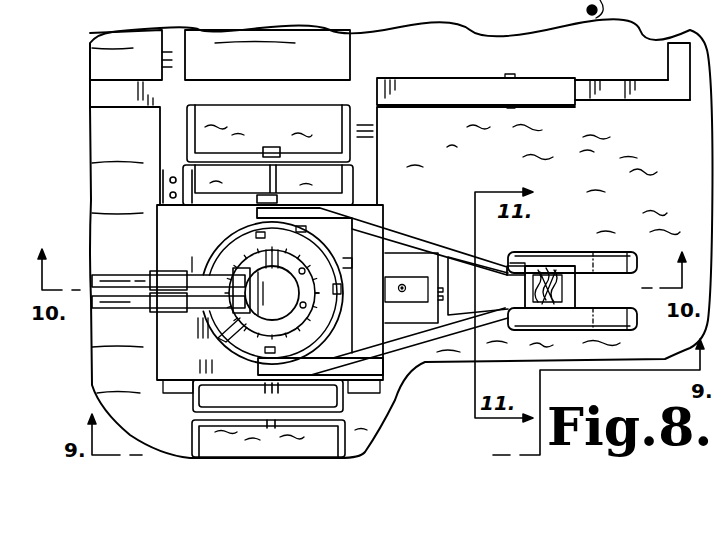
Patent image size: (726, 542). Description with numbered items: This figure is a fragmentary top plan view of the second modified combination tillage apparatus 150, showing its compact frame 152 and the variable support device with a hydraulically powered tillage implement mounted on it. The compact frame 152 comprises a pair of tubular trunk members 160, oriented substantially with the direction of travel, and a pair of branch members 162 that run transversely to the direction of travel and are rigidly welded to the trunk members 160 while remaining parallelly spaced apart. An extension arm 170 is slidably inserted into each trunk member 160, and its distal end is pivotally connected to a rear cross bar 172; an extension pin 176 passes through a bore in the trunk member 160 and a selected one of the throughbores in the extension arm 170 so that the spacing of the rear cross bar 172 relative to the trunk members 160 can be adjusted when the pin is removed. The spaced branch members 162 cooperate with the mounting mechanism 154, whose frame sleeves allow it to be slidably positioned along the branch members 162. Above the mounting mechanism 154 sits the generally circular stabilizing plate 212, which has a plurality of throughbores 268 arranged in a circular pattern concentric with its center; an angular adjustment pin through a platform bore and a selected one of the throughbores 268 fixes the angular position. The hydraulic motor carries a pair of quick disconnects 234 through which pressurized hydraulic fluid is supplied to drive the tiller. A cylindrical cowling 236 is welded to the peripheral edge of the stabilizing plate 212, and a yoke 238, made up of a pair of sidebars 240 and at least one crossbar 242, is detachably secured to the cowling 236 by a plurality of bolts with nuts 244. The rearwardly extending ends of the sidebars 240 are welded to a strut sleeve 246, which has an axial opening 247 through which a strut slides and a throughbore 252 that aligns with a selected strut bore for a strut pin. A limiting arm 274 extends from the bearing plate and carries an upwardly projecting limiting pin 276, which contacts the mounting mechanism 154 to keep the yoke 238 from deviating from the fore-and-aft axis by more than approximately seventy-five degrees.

The combination tillage apparatus 150 is at (75, 163).
The compact frame 152 is at (97, 92).
The mounting mechanism 154 is at (165, 212).
The trunk member 160 is at (284, 85).
The branch member 162 is at (170, 126).
The extension arm 170 is at (612, 88).
The rear cross bar 172 is at (680, 62).
The extension pin 176 is at (508, 76).
The stabilizing plate 212 is at (226, 258).
The quick disconnect 234 is at (178, 286).
The cowling 236 is at (245, 388).
The yoke 238 is at (384, 210).
The sidebar 240 is at (405, 242).
The crossbar 242 is at (368, 314).
The bolts with nuts 244 is at (256, 232).
The strut sleeve 246 is at (565, 266).
The axial opening 247 is at (568, 288).
The throughbore 252 is at (527, 297).
The throughbores 268 is at (247, 328).
The limiting arm 274 is at (428, 303).
The limiting pin 276 is at (402, 285).